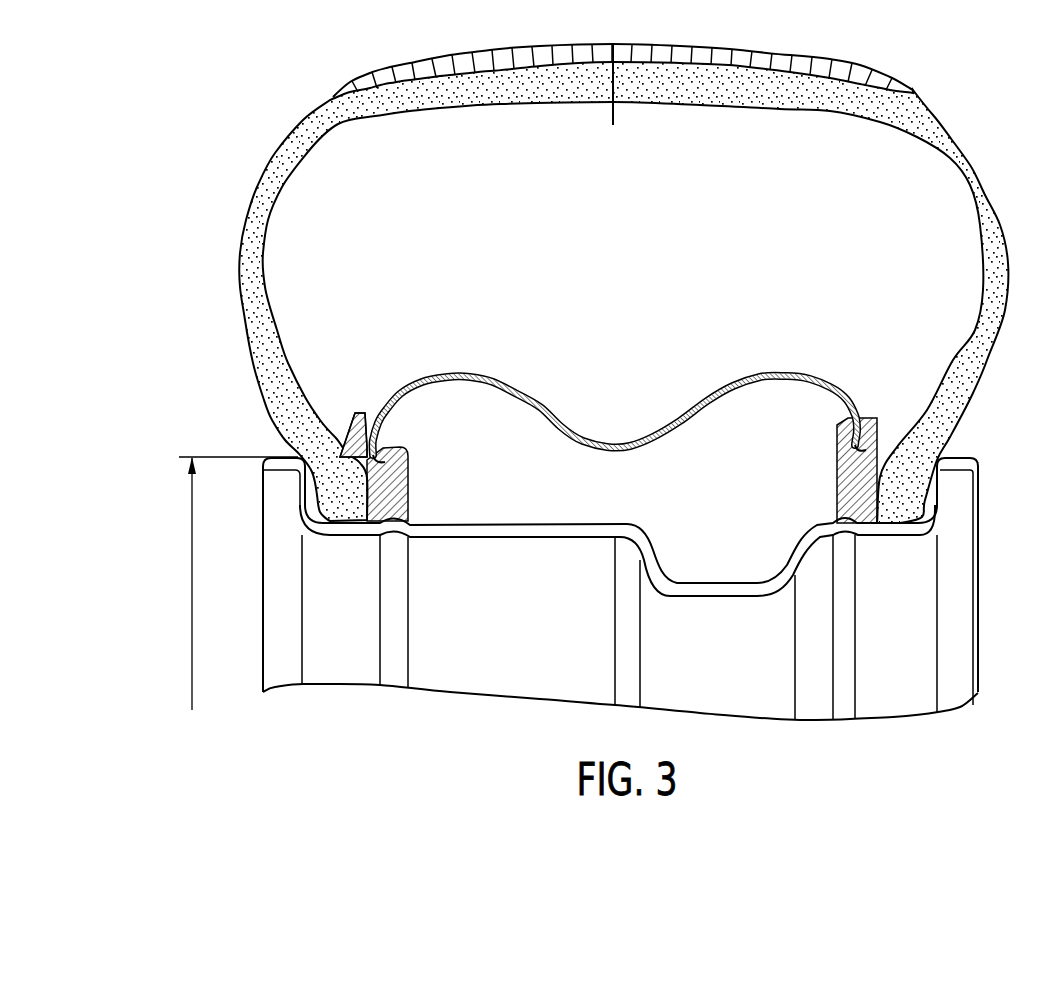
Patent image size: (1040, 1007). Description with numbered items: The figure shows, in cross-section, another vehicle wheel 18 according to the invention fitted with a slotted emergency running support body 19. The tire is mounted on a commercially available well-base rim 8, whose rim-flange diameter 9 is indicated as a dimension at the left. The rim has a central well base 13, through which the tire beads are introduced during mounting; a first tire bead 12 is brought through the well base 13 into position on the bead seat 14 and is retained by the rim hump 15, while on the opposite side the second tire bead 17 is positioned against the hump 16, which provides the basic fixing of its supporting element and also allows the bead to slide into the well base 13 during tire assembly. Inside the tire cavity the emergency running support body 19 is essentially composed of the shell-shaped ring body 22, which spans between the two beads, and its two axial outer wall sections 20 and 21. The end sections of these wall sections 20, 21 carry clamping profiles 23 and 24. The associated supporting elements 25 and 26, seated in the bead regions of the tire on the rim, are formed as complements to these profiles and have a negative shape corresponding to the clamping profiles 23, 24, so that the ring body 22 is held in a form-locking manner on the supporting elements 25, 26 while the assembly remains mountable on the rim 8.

The well-base rim 8 is at (745, 665).
The rim-flange diameter 9 is at (192, 668).
The tire bead 12 is at (335, 534).
The well base 13 is at (725, 557).
The bead seat 14 is at (361, 552).
The rim hump 15 is at (395, 527).
The hump 16 is at (840, 523).
The second tire bead 17 is at (895, 535).
The vehicle wheel 18 is at (978, 114).
The slotted emergency running support body 19 is at (619, 374).
The axial outer wall section 20 is at (861, 449).
The axial outer wall section 21 is at (380, 396).
The shell-shaped ring body 22 is at (757, 371).
The clamping profile 23 is at (393, 457).
The clamping profile 24 is at (858, 450).
The supporting element 25 is at (848, 476).
The supporting element 26 is at (399, 490).